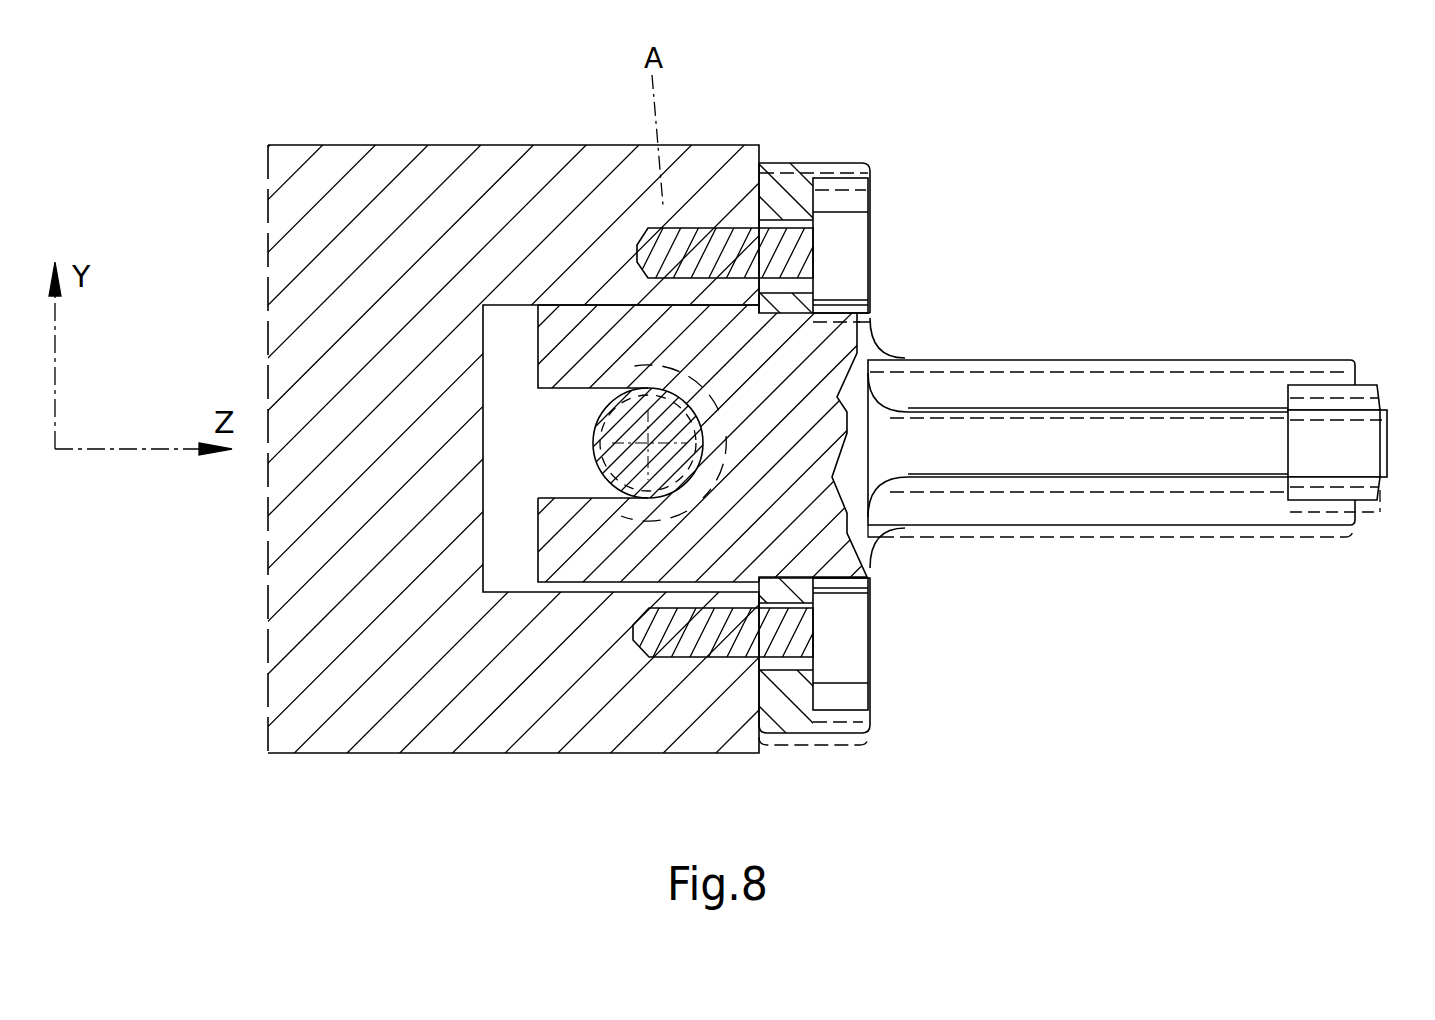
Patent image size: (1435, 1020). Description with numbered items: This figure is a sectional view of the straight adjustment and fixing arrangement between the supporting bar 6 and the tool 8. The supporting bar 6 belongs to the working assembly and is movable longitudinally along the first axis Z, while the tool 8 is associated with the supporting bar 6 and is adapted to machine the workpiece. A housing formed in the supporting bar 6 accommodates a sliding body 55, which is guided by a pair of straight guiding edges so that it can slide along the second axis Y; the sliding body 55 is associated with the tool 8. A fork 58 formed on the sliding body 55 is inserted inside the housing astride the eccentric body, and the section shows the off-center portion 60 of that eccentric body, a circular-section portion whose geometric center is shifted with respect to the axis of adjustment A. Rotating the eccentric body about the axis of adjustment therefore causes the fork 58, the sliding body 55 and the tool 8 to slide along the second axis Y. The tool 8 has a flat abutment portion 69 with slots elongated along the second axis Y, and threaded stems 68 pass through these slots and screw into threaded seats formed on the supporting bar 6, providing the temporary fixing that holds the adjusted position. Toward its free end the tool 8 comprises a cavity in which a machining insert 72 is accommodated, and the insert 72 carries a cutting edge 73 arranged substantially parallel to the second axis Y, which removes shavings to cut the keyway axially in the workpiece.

The supporting bar 6 is at (388, 682).
The tool 8 is at (1240, 358).
The sliding body 55 is at (815, 368).
The fork 58 is at (578, 348).
The off-center portion 60 is at (642, 368).
The threaded stem 68 is at (833, 637).
The flat abutment portion 69 is at (783, 163).
The machining insert 72 is at (1325, 438).
The cutting edge 73 is at (1390, 462).